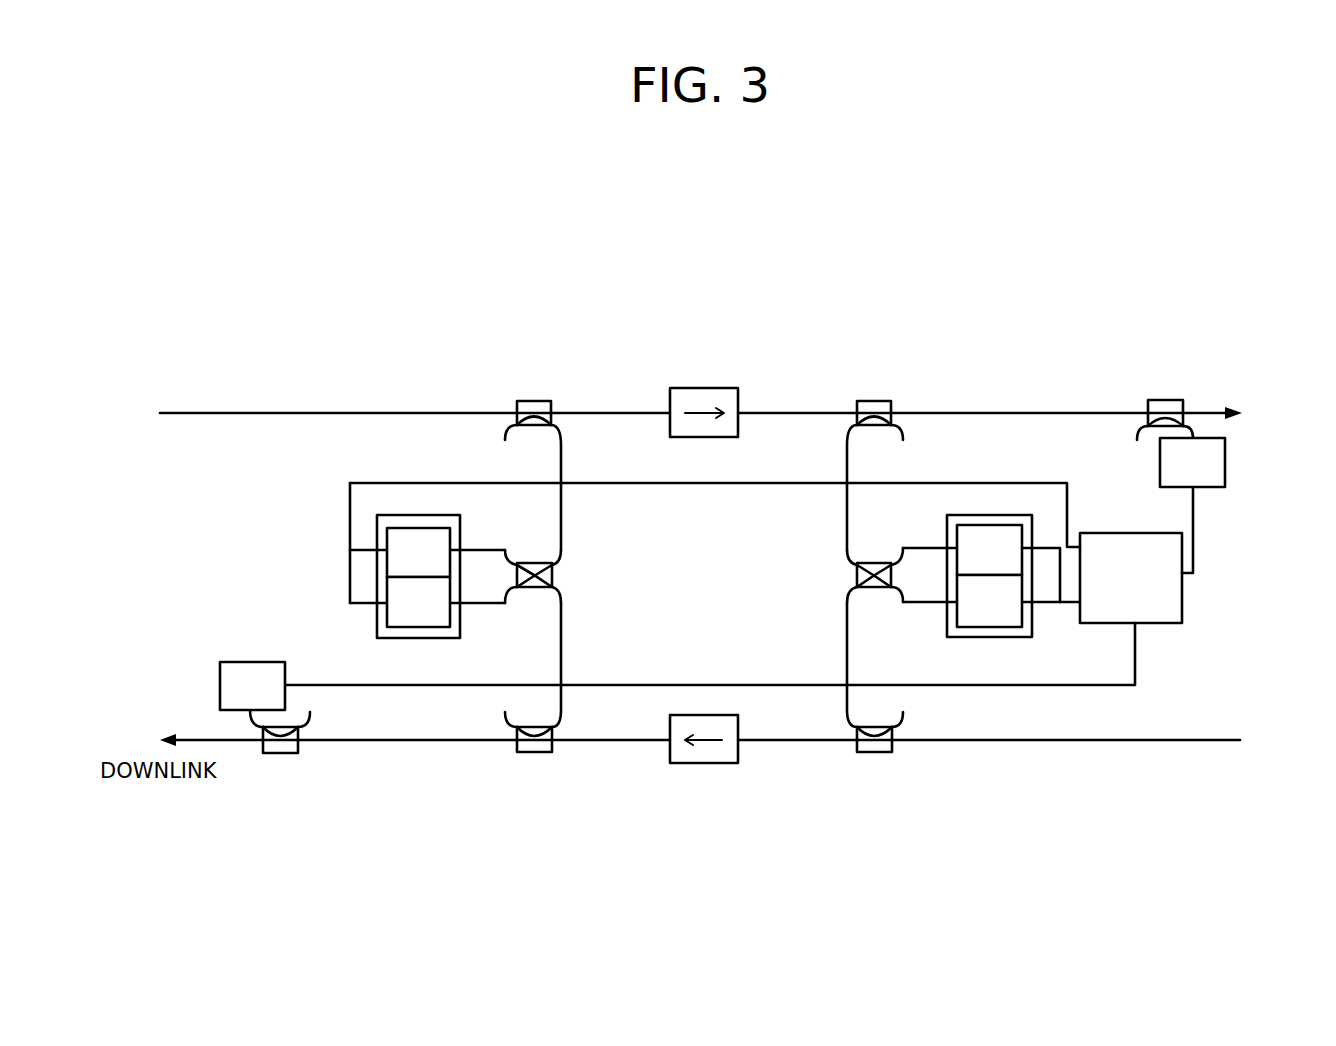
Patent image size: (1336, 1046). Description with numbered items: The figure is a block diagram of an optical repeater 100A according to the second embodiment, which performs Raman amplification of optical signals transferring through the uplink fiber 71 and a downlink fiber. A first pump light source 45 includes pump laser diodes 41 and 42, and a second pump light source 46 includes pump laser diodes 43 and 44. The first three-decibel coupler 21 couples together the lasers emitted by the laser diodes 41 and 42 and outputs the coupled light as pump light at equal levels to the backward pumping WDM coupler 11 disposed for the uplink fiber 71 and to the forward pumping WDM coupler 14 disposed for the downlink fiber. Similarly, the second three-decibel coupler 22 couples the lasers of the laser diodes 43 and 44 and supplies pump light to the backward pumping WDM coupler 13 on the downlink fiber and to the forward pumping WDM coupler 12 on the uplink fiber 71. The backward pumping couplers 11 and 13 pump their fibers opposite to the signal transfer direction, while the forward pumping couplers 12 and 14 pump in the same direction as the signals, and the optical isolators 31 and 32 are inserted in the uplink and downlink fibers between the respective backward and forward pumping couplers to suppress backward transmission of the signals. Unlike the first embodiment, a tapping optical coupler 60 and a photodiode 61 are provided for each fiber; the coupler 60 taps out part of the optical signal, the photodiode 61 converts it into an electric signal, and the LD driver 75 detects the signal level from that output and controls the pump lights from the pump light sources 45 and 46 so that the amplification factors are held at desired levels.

The optical repeater 100A is at (789, 333).
The backward pumping WDM optical coupler 11 is at (535, 400).
The forward pumping WDM optical coupler 12 is at (875, 400).
The backward pumping WDM optical coupler 13 is at (875, 754).
The forward pumping WDM optical coupler 14 is at (535, 754).
The first 3-dB coupler 21 is at (555, 574).
The second 3-dB coupler 22 is at (855, 572).
The optical isolator 31 is at (703, 386).
The optical isolator 32 is at (697, 765).
The pump laser diode 41 is at (451, 536).
The pump laser diode 42 is at (451, 618).
The pump laser diode 43 is at (957, 532).
The pump laser diode 44 is at (957, 618).
The first pump light source 45 is at (404, 576).
The second pump light source 46 is at (994, 581).
The optical coupler (tapping coupler) 60 is at (1165, 399).
The photodiode 61 is at (1226, 463).
The uplink fiber 71 is at (1040, 410).
The LD driver 75 is at (1183, 606).